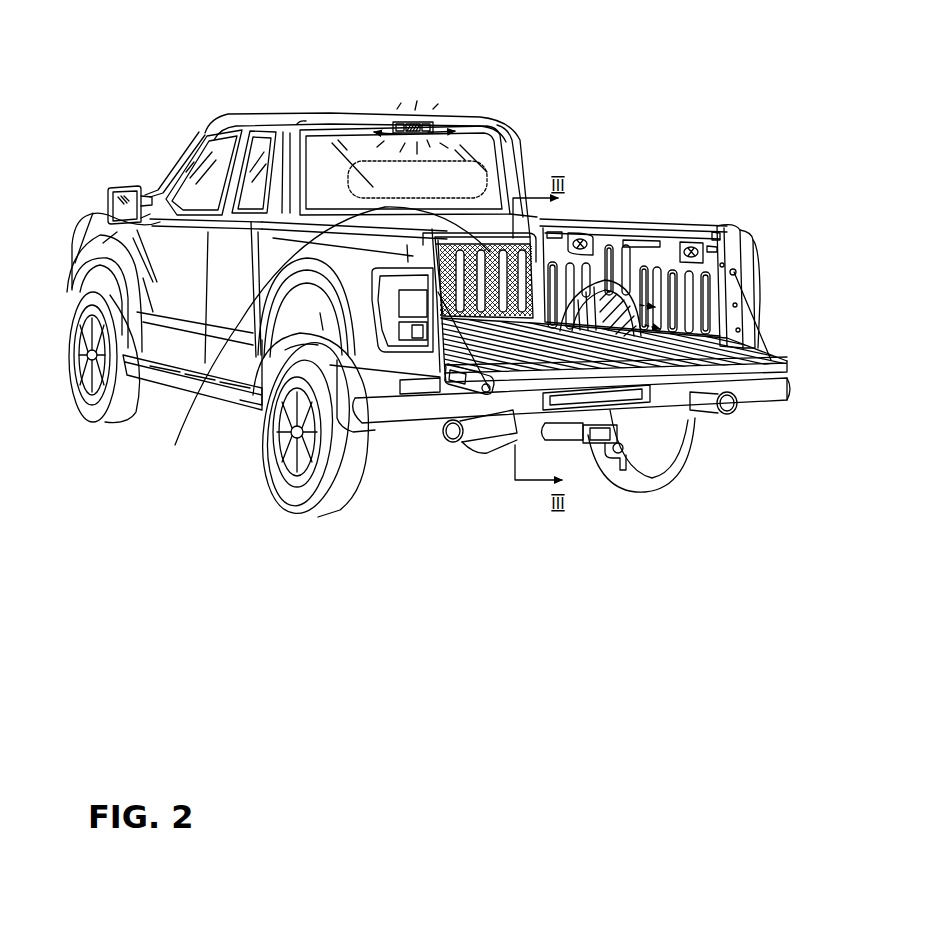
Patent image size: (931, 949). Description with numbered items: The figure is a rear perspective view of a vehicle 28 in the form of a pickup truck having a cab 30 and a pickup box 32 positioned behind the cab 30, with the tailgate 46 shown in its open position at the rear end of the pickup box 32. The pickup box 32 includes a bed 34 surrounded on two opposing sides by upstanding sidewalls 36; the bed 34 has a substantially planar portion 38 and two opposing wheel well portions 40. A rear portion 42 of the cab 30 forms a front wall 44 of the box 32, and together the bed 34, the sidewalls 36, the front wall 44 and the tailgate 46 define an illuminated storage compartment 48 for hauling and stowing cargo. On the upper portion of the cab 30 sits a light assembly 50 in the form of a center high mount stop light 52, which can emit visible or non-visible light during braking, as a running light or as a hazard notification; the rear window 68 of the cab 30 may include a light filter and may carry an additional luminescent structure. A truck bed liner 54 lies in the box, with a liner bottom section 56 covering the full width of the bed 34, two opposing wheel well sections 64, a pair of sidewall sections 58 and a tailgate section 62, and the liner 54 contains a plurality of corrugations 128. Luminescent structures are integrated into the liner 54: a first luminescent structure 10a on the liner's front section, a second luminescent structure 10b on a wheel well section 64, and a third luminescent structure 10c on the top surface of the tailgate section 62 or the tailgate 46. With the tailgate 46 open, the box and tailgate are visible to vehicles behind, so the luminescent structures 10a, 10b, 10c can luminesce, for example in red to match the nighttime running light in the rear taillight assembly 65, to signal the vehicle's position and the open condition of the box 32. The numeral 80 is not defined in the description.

The vehicle 28 is at (284, 90).
The cab 30 is at (227, 113).
The display message 80 is at (362, 163).
The center high mount stop light (CHMSL) 52 is at (410, 120).
The light assembly 50 is at (423, 116).
The rear window 68 is at (550, 190).
The rear portion of the cab 42 is at (485, 218).
The front wall 44 is at (494, 233).
The pickup box 32 is at (590, 216).
The second luminescent structure 10b is at (622, 297).
The wheel well sections 64 is at (600, 290).
The corrugations 128 is at (704, 328).
The wheel well portions 40 is at (718, 236).
The sidewalls 36 is at (350, 258).
The sidewall sections 58 is at (700, 298).
The substantially planar portion 38 is at (525, 351).
The bed 34 is at (490, 368).
The illuminated storage compartment 48 is at (450, 377).
The rear taillight assembly 65 is at (401, 343).
The first luminescent structure 10a is at (317, 337).
The third luminescent structure 10c is at (683, 402).
The liner bottom section 56 is at (702, 396).
The tailgate 46 is at (768, 387).
The tailgate section 62 is at (730, 414).
The truck bed liner 54 is at (607, 445).